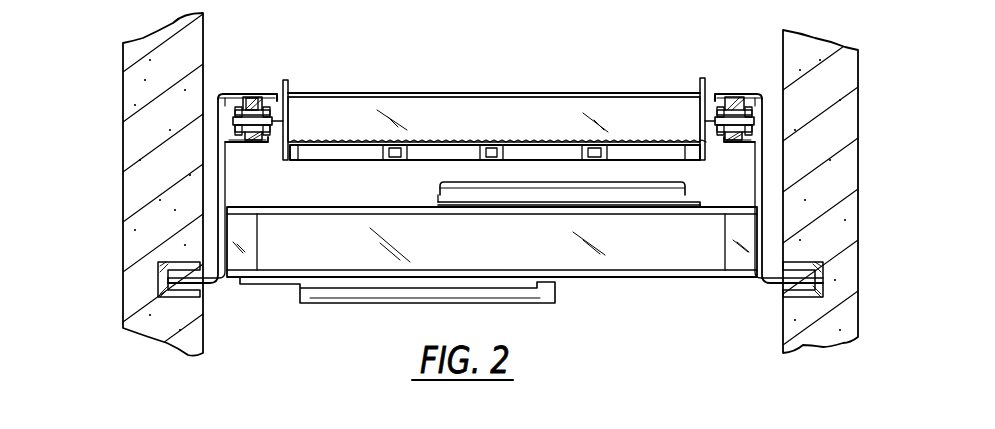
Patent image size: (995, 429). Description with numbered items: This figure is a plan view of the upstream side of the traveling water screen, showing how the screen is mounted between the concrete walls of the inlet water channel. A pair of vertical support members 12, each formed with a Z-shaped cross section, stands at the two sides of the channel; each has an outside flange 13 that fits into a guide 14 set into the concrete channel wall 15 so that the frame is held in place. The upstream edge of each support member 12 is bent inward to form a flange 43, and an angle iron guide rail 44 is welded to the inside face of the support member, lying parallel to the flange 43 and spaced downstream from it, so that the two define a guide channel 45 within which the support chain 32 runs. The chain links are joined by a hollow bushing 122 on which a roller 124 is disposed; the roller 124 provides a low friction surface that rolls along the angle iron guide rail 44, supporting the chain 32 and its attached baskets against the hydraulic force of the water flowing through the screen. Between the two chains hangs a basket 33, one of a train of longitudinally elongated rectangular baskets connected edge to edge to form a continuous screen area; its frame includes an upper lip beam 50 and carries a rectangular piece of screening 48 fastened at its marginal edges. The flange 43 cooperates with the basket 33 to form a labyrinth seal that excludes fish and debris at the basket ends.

The vertical support member 12 is at (221, 186).
The outside flange 13 is at (190, 282).
The guide 14 is at (172, 297).
The wall 15 is at (123, 44).
The support chain 32 is at (233, 129).
The basket 33 is at (568, 115).
The flange 43 is at (228, 94).
The angle iron guide rail 44 is at (243, 145).
The guide channel 45 is at (228, 103).
The screening 48 is at (517, 142).
The upper lip beam 50 is at (380, 92).
The bushing 122 is at (252, 97).
The roller 124 is at (268, 94).